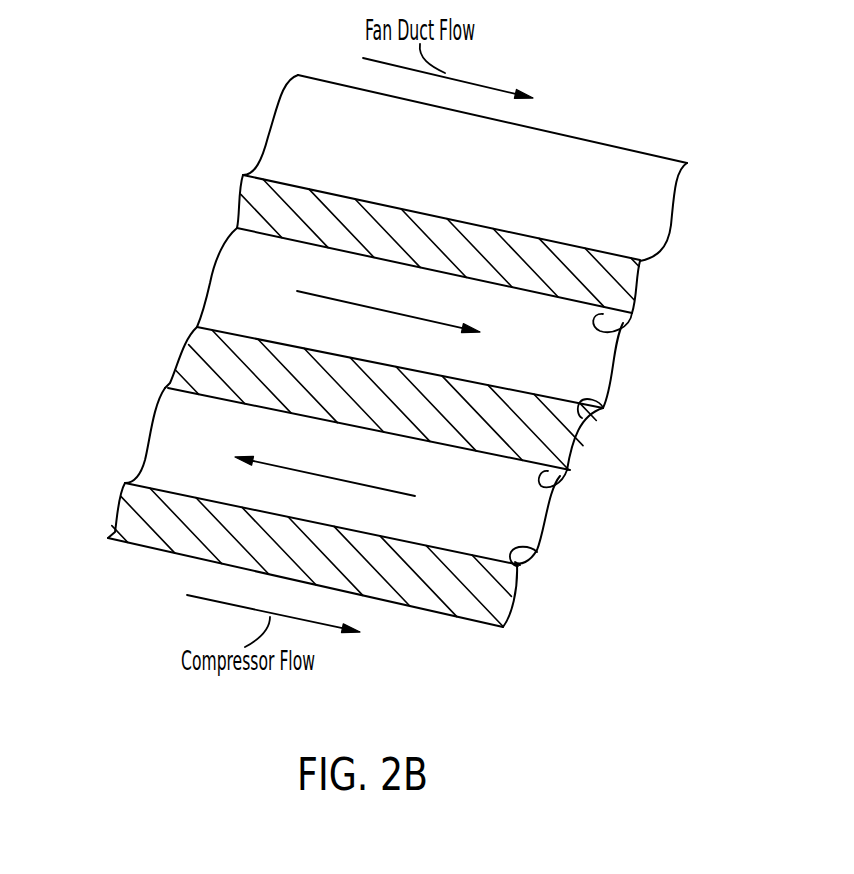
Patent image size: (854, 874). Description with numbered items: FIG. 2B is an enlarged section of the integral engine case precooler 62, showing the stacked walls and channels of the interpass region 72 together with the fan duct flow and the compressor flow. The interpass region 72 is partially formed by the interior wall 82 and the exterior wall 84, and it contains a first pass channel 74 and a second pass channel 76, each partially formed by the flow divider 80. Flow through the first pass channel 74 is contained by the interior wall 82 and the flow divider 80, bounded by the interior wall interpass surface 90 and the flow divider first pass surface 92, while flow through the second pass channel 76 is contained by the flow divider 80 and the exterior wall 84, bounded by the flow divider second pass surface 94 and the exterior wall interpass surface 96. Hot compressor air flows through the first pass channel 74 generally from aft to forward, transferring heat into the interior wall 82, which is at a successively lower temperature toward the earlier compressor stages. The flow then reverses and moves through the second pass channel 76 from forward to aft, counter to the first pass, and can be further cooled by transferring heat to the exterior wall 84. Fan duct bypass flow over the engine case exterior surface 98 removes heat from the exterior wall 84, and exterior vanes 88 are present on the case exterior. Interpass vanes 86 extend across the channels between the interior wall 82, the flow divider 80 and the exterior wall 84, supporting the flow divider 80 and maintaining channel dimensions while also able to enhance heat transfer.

The integral engine case precooler 62 is at (82, 117).
The interpass region 72 is at (697, 337).
The first pass channel 74 is at (511, 521).
The second pass channel 76 is at (221, 300).
The flow divider 80 is at (190, 365).
The interior wall 82 is at (122, 513).
The exterior wall 84 is at (248, 203).
The interpass vanes 86 is at (232, 257).
The exterior vanes 88 is at (316, 94).
The interior wall interpass surface 90 is at (540, 551).
The flow divider first pass surface 92 is at (557, 491).
The flow divider second pass surface 94 is at (600, 406).
The exterior wall interpass surface 96 is at (620, 329).
The engine case exterior surface 98 is at (430, 205).